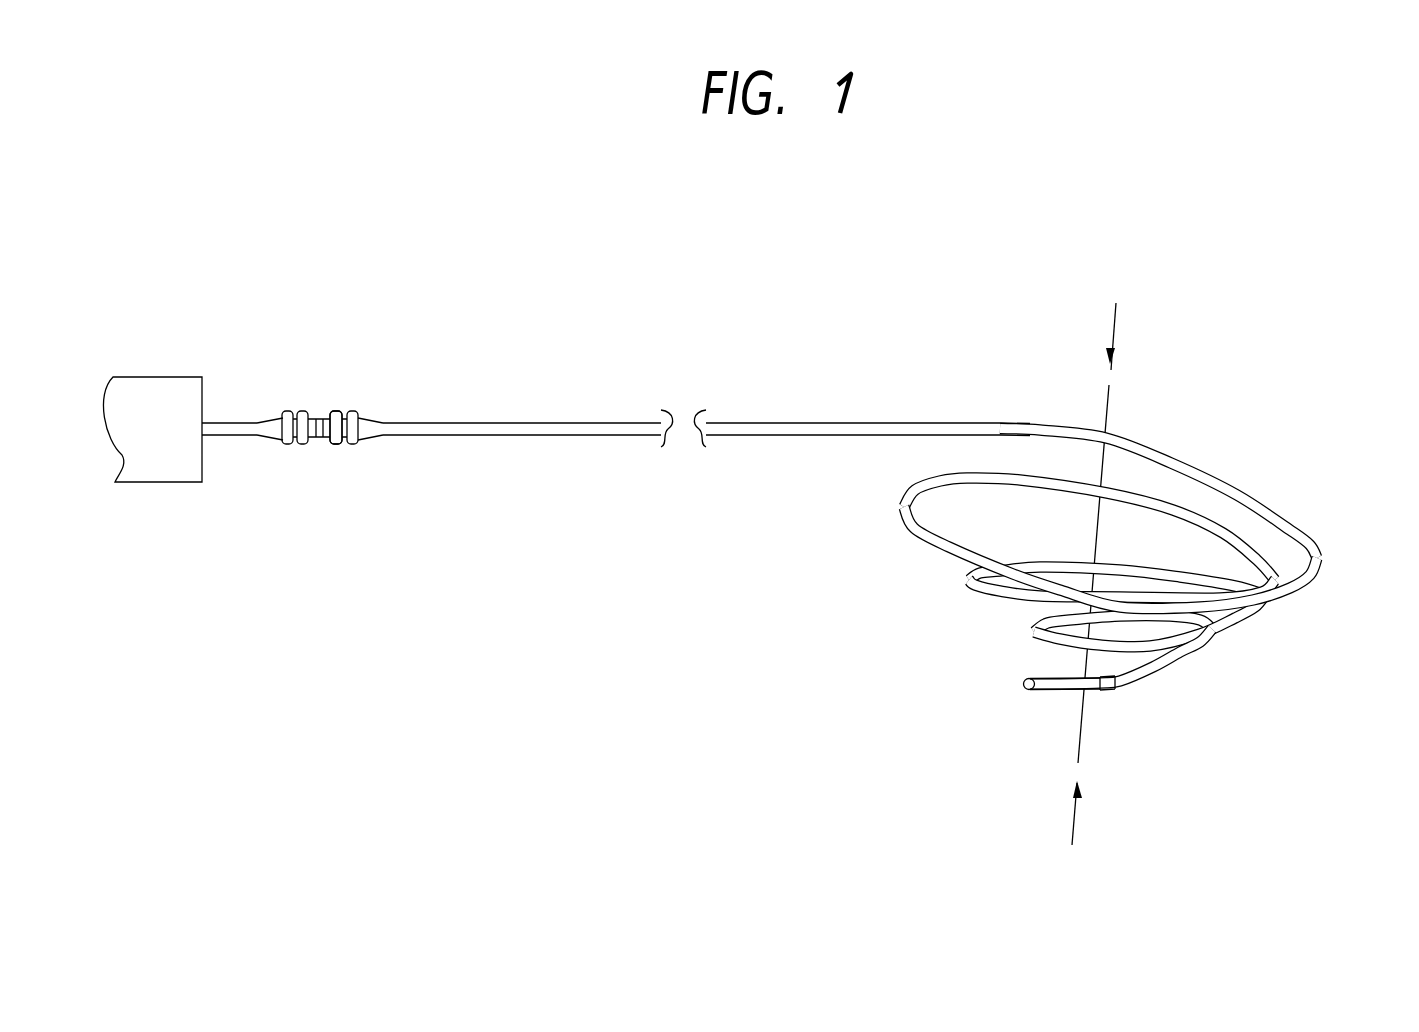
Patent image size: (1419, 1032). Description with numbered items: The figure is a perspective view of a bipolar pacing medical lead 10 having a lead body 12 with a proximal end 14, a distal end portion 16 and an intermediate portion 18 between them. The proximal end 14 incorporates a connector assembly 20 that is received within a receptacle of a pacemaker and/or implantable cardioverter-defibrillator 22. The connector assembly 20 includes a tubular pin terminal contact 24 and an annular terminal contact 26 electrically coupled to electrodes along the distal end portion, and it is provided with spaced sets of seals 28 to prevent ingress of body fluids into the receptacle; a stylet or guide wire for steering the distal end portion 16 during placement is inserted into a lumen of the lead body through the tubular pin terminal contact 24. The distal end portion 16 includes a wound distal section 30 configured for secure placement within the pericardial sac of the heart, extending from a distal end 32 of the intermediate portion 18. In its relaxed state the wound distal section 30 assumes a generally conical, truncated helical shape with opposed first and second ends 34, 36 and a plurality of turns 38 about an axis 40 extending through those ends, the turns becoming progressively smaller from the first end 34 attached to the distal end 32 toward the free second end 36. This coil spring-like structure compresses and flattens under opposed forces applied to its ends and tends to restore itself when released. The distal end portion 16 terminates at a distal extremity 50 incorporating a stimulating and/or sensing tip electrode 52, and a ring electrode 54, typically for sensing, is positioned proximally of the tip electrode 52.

The medical lead 10 is at (780, 328).
The lead body 12 is at (828, 403).
The proximal end 14 is at (390, 422).
The distal end portion 16 is at (1188, 378).
The intermediate portion 18 is at (616, 423).
The connector assembly 20 is at (270, 388).
The pacemaker and/or implantable cardioverter-defibrillator 22 is at (168, 378).
The tubular pin terminal contact 24 is at (230, 438).
The annular terminal contact 26 is at (318, 411).
The seals 28 is at (290, 443).
The wound distal section 30 is at (1308, 603).
The distal end of the intermediate portion 32 is at (1022, 428).
The first end 34 is at (1180, 508).
The second end 36 is at (1094, 690).
The turns 38 is at (1285, 507).
The axis 40 is at (1100, 518).
The distal extremity 50 is at (1040, 690).
The tip electrode 52 is at (1020, 684).
The ring electrode 54 is at (1117, 690).